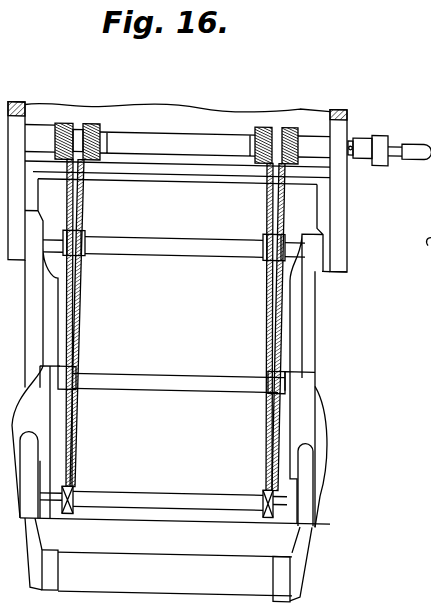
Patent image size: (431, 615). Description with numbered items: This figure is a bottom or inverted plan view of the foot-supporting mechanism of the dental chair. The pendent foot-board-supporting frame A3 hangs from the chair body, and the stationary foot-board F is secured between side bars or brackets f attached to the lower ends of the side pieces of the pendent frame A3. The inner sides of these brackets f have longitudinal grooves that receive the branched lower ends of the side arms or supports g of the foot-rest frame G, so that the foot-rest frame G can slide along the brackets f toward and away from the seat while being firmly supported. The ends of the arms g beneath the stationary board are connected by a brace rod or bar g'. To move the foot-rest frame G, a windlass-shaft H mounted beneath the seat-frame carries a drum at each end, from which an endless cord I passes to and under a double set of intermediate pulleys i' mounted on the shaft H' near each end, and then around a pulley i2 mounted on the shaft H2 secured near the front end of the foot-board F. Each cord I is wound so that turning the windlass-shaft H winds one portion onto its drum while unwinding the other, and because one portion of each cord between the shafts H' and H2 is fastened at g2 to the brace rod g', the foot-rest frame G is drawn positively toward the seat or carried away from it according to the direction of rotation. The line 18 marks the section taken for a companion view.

The pendent foot-board-supporting frame A3 is at (16, 102).
The windlass-shaft H is at (228, 141).
The shaft H' is at (174, 239).
The shaft H2 is at (166, 502).
The endless cord I is at (75, 310).
The foot-board F is at (186, 343).
The side bar or bracket f is at (34, 350).
The side arm or support g is at (175, 445).
The brace rod or bar g' is at (178, 374).
The fastening point g2 is at (73, 372).
The intermediate pulley i' is at (174, 256).
The pulley i2 is at (73, 489).
The foot-rest frame G is at (28, 542).
The part 18 is at (430, 252).